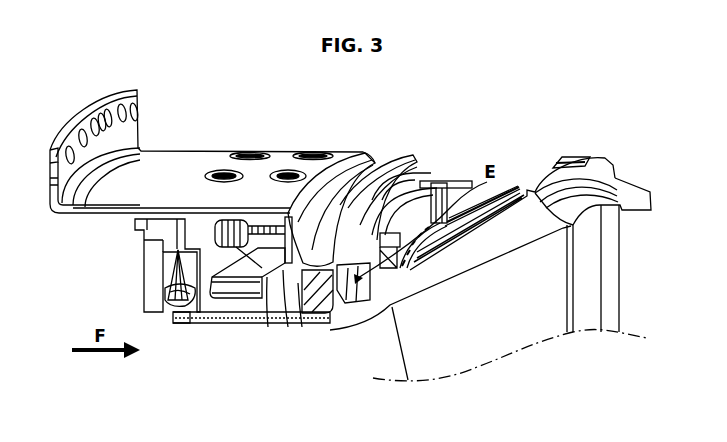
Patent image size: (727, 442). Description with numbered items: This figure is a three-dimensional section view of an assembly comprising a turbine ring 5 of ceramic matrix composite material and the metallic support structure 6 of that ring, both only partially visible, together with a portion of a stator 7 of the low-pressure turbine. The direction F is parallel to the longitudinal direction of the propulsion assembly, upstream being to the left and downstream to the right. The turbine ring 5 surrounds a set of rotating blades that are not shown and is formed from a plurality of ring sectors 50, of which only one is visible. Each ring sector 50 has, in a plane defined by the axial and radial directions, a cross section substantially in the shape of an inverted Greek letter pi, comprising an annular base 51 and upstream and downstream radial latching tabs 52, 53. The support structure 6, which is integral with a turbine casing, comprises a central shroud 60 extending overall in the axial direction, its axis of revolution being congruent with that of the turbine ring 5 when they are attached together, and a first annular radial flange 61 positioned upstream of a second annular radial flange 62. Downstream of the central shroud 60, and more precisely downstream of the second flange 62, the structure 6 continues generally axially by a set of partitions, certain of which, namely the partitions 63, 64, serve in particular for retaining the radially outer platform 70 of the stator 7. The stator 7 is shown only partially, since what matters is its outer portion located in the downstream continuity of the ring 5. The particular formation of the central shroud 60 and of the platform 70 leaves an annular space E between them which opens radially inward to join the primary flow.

The turbine ring 5 is at (220, 315).
The ring sector 50 is at (222, 328).
The annular base 51 is at (183, 324).
The upstream radial latching tab 52 is at (200, 285).
The downstream radial latching tab 53 is at (266, 300).
The metallic support structure 6 is at (265, 228).
The central shroud 60 is at (204, 160).
The first annular radial flange 61 is at (200, 243).
The second annular radial flange 62 is at (292, 290).
The partition 63 is at (456, 168).
The partition 64 is at (333, 300).
The stator 7 is at (556, 366).
The radially outer platform 70 is at (519, 182).